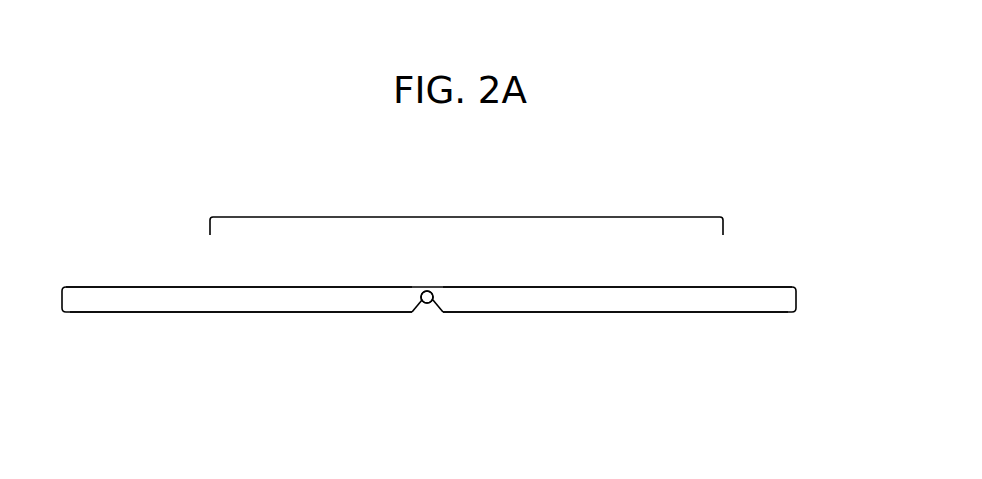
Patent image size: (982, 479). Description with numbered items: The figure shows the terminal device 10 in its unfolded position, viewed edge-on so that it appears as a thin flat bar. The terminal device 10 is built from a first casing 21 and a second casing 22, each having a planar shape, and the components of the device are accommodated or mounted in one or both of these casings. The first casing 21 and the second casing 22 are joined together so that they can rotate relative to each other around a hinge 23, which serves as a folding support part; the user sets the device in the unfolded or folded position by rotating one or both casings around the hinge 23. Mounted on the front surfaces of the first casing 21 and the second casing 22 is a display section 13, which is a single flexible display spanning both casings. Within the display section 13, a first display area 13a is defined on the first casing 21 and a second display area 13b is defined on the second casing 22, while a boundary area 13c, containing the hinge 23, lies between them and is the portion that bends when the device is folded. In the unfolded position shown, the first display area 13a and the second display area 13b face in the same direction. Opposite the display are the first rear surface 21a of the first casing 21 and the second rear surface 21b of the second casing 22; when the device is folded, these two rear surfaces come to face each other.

The terminal device 10 is at (797, 258).
The display section 13 is at (466, 217).
The first display area 13a is at (267, 287).
The second display area 13b is at (613, 288).
The boundary area 13c is at (420, 287).
The first casing 21 is at (131, 300).
The first rear surface 21a is at (240, 313).
The second rear surface 21b is at (608, 312).
The second casing 22 is at (760, 304).
The hinge 23 is at (429, 303).